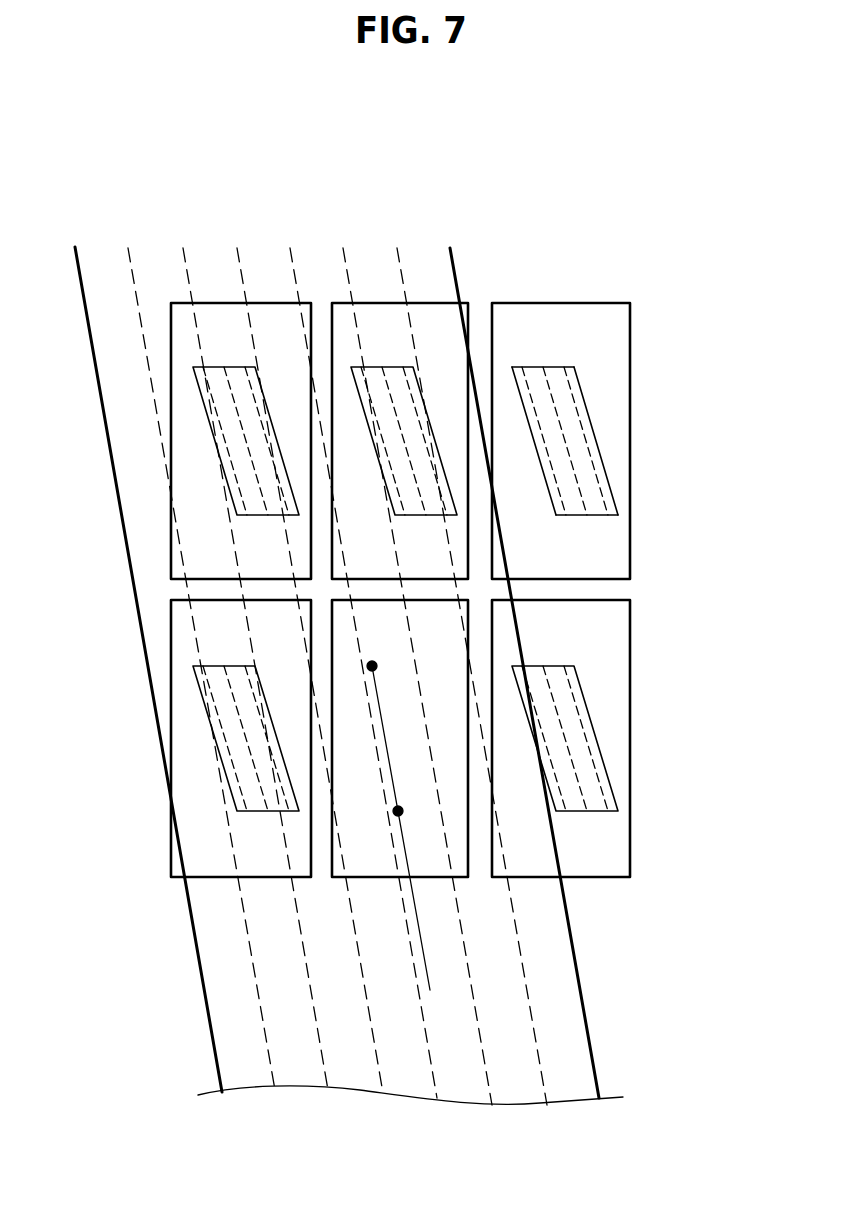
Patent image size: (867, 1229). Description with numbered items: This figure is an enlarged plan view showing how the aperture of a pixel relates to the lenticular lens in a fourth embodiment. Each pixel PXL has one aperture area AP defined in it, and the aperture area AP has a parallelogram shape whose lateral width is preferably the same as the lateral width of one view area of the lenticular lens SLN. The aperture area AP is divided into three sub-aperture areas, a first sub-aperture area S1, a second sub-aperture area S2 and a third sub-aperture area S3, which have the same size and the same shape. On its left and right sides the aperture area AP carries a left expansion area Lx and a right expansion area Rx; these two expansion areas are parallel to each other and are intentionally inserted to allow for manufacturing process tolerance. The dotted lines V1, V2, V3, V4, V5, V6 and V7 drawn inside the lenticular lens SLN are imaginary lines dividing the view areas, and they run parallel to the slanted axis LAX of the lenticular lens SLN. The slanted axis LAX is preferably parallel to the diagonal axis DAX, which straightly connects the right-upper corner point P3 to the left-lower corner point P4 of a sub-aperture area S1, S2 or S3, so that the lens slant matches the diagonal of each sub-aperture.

The first virtual line V1 is at (102, 262).
The second virtual line V2 is at (158, 262).
The third virtual line V3 is at (213, 262).
The fourth virtual line V4 is at (268, 262).
The fifth virtual line V5 is at (324, 262).
The sixth virtual line V6 is at (513, 630).
The seventh virtual line V7 is at (428, 262).
The aperture area AP is at (546, 335).
The left expansion area Lx is at (522, 392).
The right expansion area Rx is at (580, 387).
The first sub-aperture area S1 is at (523, 373).
The second sub-aperture area S2 is at (543, 373).
The third sub-aperture area S3 is at (563, 373).
The right-upper corner point P3 is at (373, 663).
The left-lower corner point P4 is at (400, 813).
The pixel PXL is at (630, 760).
The diagonal axis DAX is at (520, 795).
The slanted axis LAX is at (480, 1017).
The lenticular lens SLN is at (595, 1068).